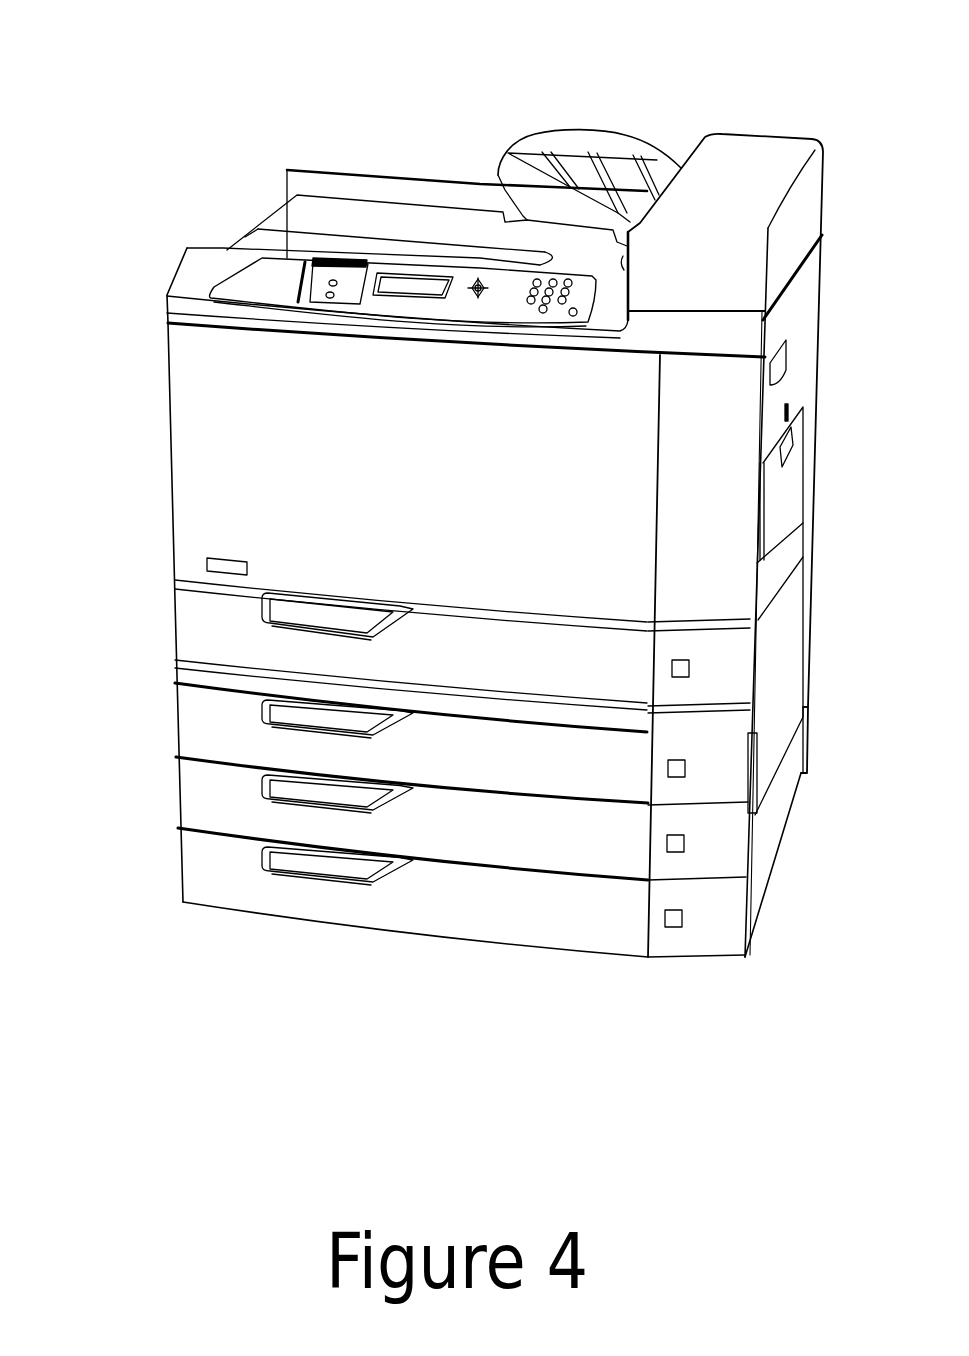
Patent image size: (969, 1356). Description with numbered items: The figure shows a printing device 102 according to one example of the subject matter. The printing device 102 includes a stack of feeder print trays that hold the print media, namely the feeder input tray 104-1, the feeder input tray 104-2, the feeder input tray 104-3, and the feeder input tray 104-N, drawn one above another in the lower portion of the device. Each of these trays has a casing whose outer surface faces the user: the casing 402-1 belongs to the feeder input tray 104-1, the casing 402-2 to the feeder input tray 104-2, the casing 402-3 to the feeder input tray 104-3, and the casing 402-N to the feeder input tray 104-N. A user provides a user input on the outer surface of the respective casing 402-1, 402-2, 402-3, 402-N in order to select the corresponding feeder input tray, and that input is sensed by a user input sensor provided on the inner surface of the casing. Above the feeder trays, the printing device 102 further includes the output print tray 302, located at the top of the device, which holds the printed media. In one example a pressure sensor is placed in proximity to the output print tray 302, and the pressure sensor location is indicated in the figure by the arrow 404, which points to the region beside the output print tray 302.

The printing device 102 is at (411, 54).
The output print tray 302 is at (362, 226).
The arrow 404 is at (617, 278).
The feeder input tray 104-N is at (165, 607).
The feeder input tray 104-3 is at (167, 697).
The feeder input tray 104-2 is at (170, 776).
The feeder input tray 104-1 is at (174, 849).
The casing 402-N is at (402, 638).
The casing 402-3 is at (399, 737).
The casing 402-2 is at (403, 811).
The casing 402-1 is at (401, 882).